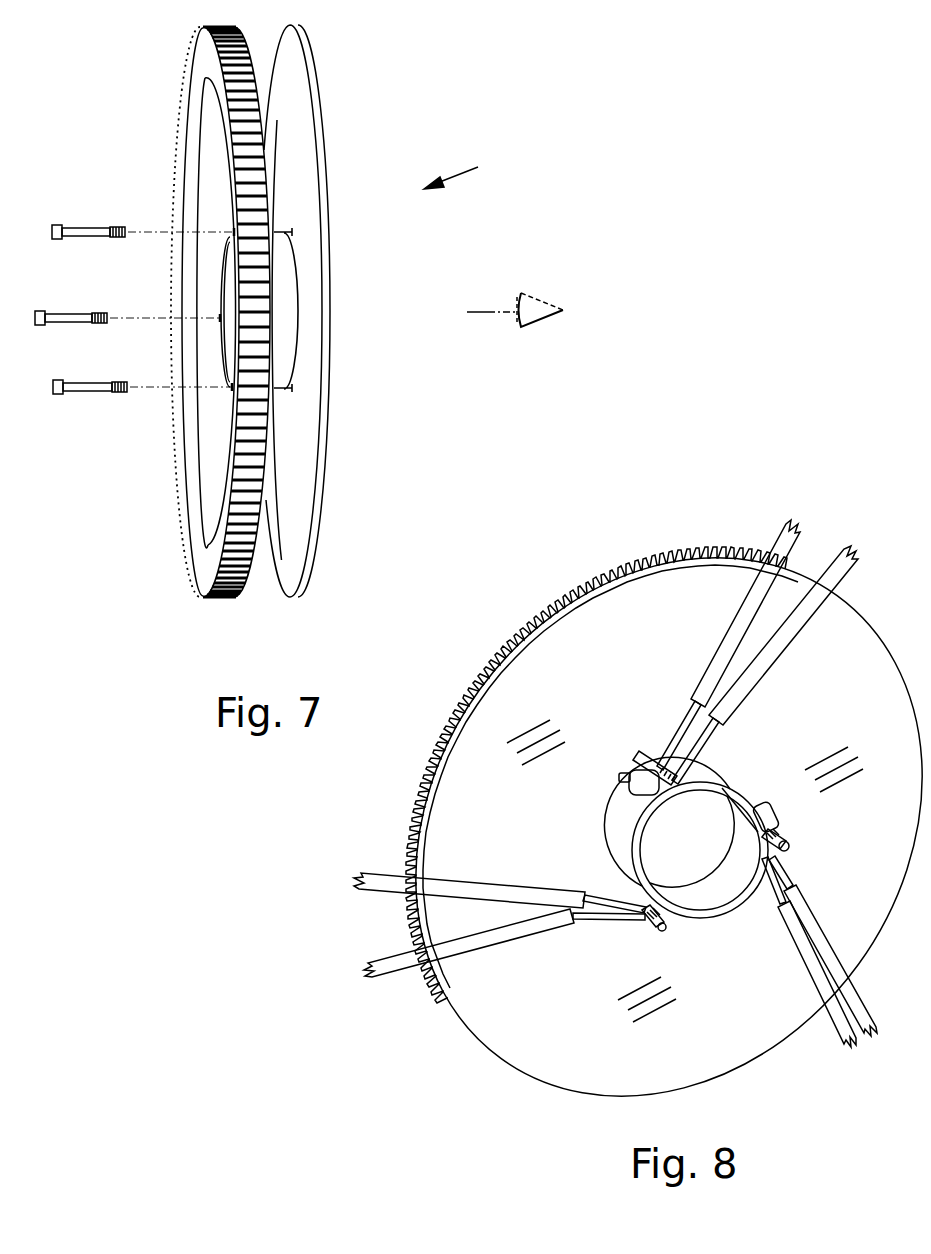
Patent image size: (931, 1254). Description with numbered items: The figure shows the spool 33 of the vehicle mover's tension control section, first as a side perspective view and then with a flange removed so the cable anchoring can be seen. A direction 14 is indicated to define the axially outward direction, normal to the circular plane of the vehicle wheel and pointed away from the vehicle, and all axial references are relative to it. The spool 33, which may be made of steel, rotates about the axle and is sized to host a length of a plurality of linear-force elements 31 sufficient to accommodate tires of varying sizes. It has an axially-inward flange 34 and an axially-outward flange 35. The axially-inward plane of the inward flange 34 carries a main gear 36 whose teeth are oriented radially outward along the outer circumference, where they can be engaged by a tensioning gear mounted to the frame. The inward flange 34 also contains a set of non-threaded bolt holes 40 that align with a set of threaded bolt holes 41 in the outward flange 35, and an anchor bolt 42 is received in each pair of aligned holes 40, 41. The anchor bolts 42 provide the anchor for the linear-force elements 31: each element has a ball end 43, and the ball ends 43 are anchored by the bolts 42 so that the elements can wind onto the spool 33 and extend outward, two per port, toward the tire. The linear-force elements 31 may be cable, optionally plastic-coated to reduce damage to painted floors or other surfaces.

In FIG. 7, the direction 14 is at (498, 308).
In FIG. 8, the linear-force elements 31 is at (757, 670).
In FIG. 7, the spool 33 is at (465, 165).
In FIG. 7, the axially-inward flange 34 is at (220, 165).
In FIG. 8, the axially-inward flange 34 is at (490, 995).
In FIG. 7, the axially-outward flange 35 is at (295, 155).
In FIG. 7, the main gear 36 is at (207, 60).
In FIG. 8, the main gear 36 is at (415, 792).
In FIG. 7, the non-threaded bolt holes 40 is at (234, 233).
In FIG. 7, the threaded bolt holes 41 is at (293, 232).
In FIG. 7, the anchor bolt 42 is at (80, 230).
In FIG. 8, the anchor bolt 42 is at (650, 767).
In FIG. 8, the ball end 43 is at (632, 768).